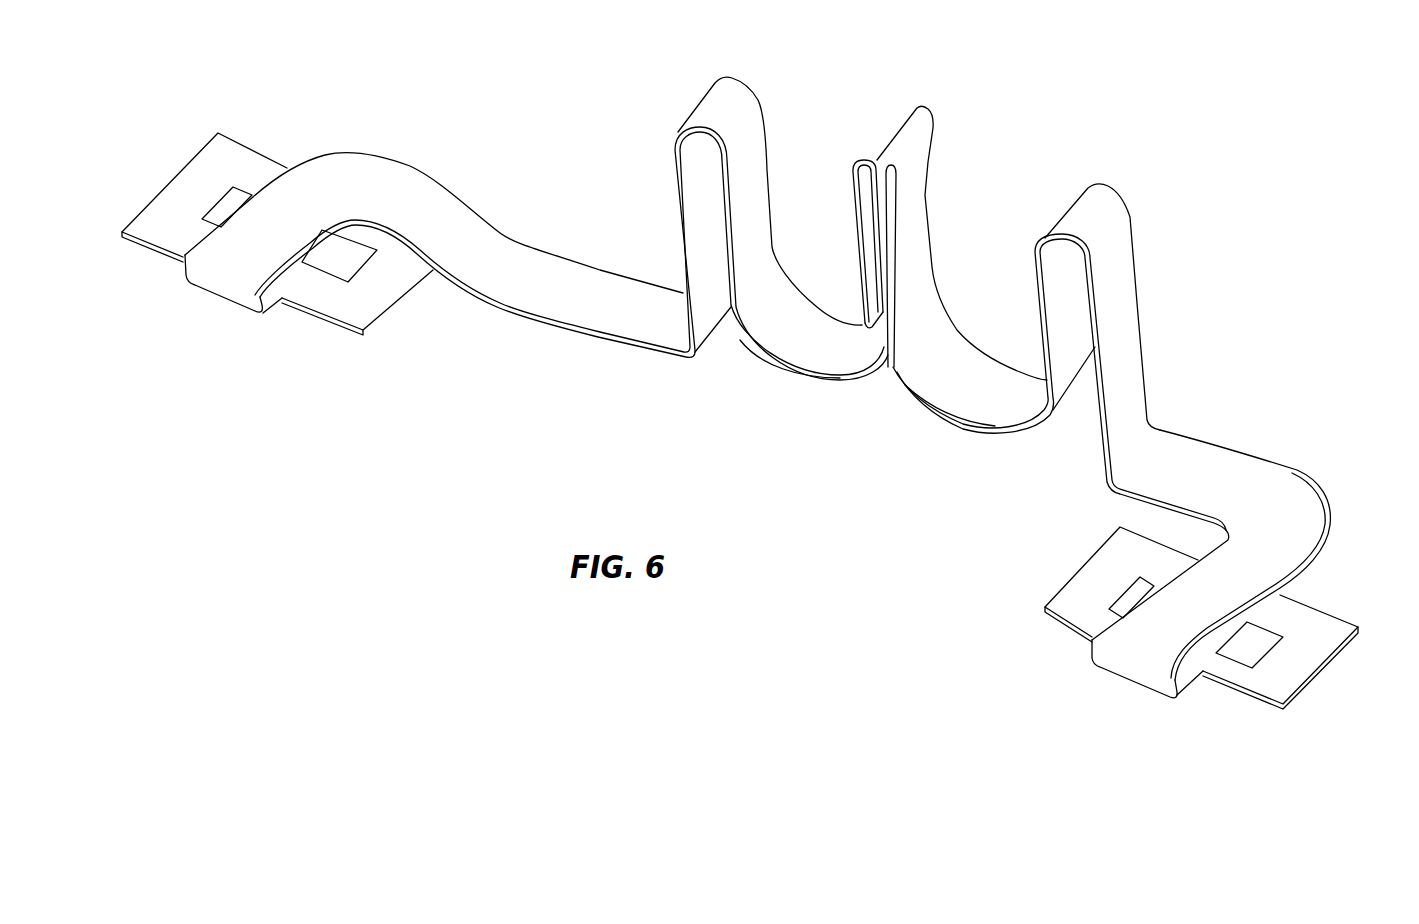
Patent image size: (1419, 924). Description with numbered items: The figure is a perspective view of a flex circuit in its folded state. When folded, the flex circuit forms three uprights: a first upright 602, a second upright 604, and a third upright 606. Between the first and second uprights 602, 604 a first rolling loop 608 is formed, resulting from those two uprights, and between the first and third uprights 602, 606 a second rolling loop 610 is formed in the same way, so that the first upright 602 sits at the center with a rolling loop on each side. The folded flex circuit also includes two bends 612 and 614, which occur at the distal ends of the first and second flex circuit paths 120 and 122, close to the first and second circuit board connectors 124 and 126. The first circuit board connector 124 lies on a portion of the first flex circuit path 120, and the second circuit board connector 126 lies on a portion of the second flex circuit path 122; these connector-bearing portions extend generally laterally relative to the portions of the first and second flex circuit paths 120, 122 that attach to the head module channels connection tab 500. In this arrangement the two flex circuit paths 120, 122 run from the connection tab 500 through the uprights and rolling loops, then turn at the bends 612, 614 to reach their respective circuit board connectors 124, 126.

The first flex circuit path 120 is at (1111, 438).
The second flex circuit path 122 is at (530, 234).
The first circuit board connector 124 is at (1342, 618).
The second circuit board connector 126 is at (252, 150).
The head module channels connection tab 500 is at (920, 222).
The first upright 602 is at (923, 113).
The second upright 604 is at (1093, 186).
The third upright 606 is at (735, 80).
The first rolling loop 608 is at (982, 433).
The second rolling loop 610 is at (812, 380).
The bend 612 is at (1122, 678).
The bend 614 is at (217, 297).